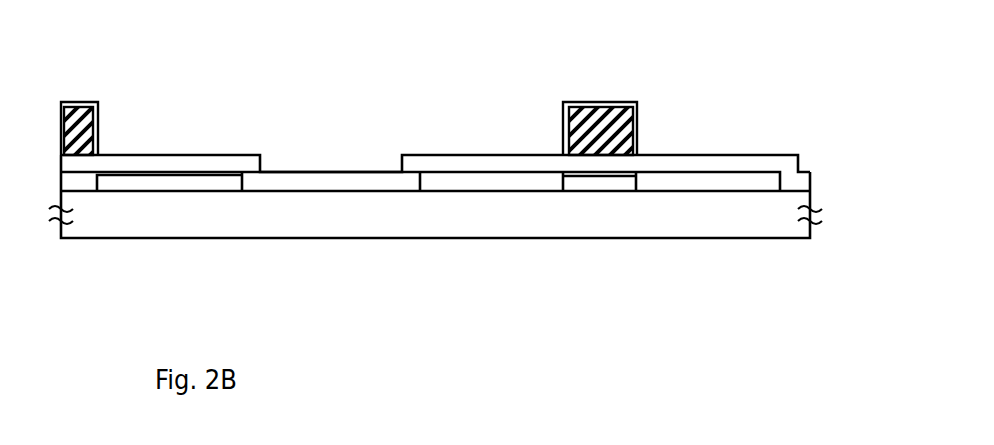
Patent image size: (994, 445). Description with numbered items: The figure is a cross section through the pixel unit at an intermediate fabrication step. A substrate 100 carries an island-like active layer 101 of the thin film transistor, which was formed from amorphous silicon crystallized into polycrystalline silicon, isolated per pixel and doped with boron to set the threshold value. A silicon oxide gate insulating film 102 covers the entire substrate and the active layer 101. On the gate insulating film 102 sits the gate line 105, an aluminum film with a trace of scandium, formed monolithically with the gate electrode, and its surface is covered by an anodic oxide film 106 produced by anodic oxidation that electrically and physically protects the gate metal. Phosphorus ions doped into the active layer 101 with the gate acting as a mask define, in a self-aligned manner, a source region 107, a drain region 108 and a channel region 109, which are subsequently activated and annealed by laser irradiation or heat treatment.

The substrate 100 is at (810, 227).
The active layer 101 is at (762, 173).
The gate insulating film 102 is at (810, 178).
The gate line 105 is at (590, 115).
The anodic oxide film 106 is at (632, 100).
The source region 107 is at (162, 191).
The drain region 108 is at (487, 191).
The channel region 109 is at (600, 191).